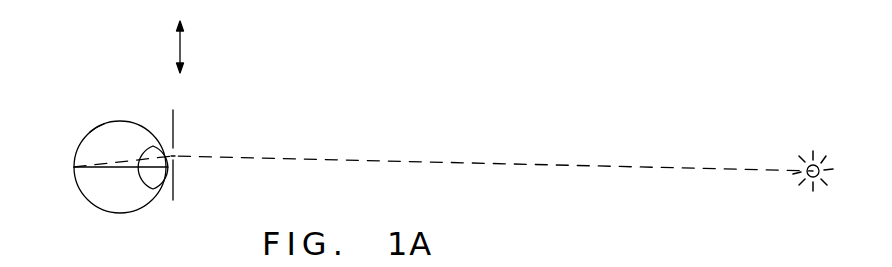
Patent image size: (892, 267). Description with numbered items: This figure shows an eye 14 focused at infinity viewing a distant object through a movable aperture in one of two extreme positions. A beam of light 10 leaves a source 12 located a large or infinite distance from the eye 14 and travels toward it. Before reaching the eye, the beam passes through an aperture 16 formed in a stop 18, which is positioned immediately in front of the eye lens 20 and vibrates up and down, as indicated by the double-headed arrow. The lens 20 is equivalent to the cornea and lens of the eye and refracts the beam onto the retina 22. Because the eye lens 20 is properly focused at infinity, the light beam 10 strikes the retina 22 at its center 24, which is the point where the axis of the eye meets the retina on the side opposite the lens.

The light beam 10 is at (609, 165).
The source 12 is at (804, 160).
The eye 14 is at (123, 124).
The aperture 16 is at (175, 155).
The stop 18 is at (173, 128).
The lens 20 is at (154, 190).
The retina 22 is at (96, 129).
The center of the retina 24 is at (73, 167).